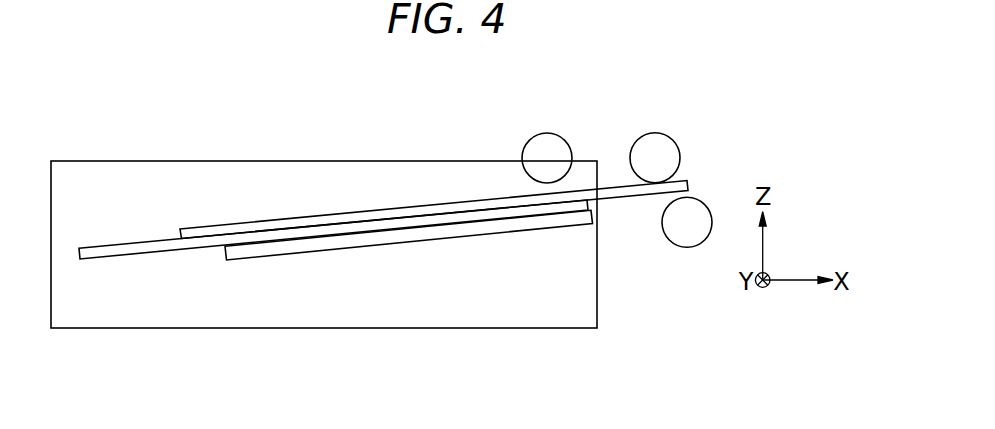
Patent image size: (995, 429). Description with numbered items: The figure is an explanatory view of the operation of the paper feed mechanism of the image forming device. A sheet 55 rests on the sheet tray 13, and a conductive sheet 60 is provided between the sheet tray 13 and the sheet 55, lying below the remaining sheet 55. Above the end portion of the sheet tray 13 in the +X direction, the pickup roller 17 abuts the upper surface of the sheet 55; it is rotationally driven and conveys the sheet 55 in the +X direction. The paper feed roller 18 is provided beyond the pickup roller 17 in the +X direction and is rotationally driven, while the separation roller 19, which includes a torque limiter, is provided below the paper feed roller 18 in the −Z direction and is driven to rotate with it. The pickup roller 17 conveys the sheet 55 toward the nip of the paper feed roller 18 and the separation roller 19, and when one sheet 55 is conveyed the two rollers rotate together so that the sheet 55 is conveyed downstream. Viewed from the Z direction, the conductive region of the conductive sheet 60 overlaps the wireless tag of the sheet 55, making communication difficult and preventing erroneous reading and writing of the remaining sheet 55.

The sheet tray 13 is at (290, 252).
The pickup roller 17 is at (550, 133).
The paper feed roller 18 is at (657, 133).
The separation roller 19 is at (689, 247).
The sheet 55 is at (257, 222).
The conductive sheet 60 is at (163, 252).